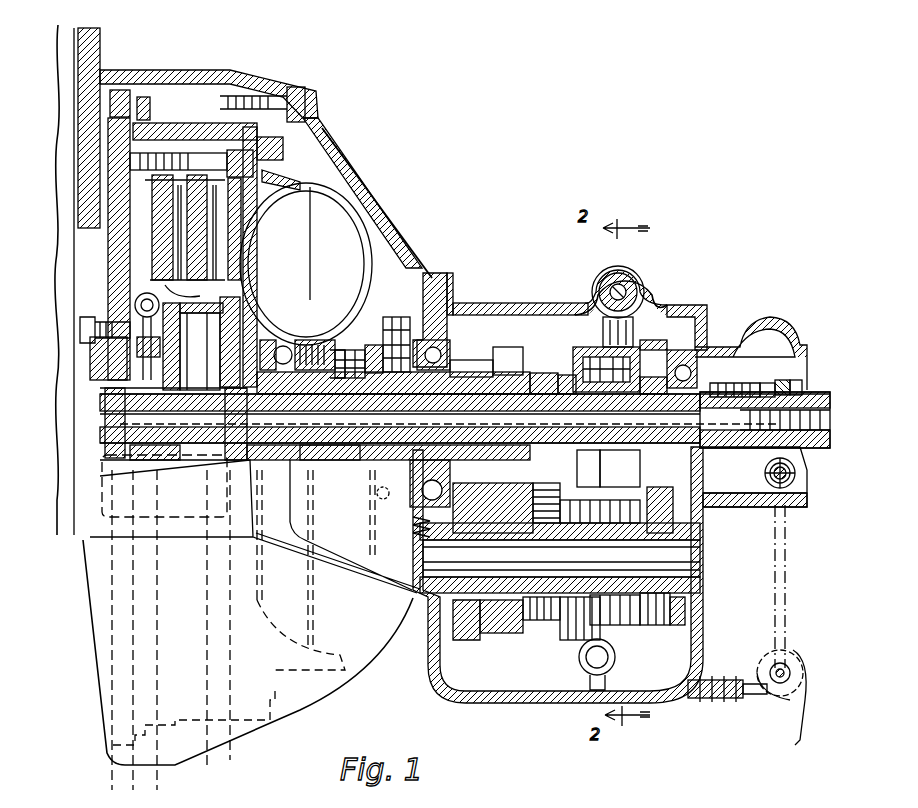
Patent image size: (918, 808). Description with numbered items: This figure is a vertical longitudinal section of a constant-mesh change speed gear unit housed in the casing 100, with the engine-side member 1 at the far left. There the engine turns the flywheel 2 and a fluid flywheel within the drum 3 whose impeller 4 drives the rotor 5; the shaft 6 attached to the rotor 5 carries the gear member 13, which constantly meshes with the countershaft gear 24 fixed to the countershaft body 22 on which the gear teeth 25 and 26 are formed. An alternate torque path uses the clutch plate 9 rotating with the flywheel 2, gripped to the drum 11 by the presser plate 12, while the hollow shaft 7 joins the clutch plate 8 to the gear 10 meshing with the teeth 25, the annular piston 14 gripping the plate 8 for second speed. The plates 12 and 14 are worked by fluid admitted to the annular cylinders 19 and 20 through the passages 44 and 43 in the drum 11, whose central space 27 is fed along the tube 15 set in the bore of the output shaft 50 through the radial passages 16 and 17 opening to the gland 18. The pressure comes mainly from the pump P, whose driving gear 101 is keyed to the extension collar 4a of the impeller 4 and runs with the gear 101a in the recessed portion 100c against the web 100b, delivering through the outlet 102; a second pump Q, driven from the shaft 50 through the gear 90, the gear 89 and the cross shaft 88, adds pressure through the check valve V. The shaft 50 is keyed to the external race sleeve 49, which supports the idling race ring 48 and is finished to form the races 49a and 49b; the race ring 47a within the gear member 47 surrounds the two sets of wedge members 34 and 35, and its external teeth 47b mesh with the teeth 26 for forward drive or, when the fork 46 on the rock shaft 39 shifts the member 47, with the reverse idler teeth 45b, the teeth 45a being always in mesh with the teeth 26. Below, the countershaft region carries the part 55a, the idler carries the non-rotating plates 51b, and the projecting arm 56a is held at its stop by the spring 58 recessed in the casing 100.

The bolt 1 is at (93, 317).
The flywheel 2 is at (110, 152).
The drum 3 is at (166, 118).
The impeller 4 is at (353, 232).
The extension collar 4a is at (367, 360).
The driven rotor 5 is at (293, 203).
The shaft 6 is at (410, 467).
The hollow shaft 7 is at (340, 447).
The clutch plate 8 is at (210, 212).
The clutch plate 9 is at (150, 236).
The gear 10 is at (507, 350).
The drum 11 is at (173, 360).
The presser plate 12 is at (177, 187).
The gear member 13 is at (463, 360).
The annular piston 14 is at (207, 243).
The tube 15 is at (343, 440).
The radial passage 16 is at (730, 400).
The radial passage 17 is at (780, 390).
The gland 18 is at (743, 390).
The annular cylinder 19 is at (173, 183).
The annular cylinder 20 is at (197, 183).
The countershaft body 22 is at (450, 592).
The countershaft gear 24 is at (477, 637).
The gear teeth 25 is at (517, 633).
The gear teeth 26 is at (547, 597).
The central space 27 is at (200, 460).
The wedge members 34 is at (587, 473).
The wedge members 35 is at (627, 473).
The rock shaft 39 is at (607, 283).
The passage 43 is at (212, 313).
The passage 44 is at (183, 313).
The teeth 45a is at (557, 613).
The teeth 45b is at (650, 603).
The fork 46 is at (650, 310).
The gear member 47 is at (607, 350).
The overrunning clutch race ring 47a is at (637, 327).
The external teeth 47b is at (690, 313).
The race ring 48 is at (577, 370).
The external race sleeve 49 is at (565, 375).
The overrunning clutch race 49a is at (533, 373).
The overrunning clutch race 49b is at (647, 377).
The output shaft 50 is at (820, 397).
The plates 51b is at (660, 613).
The countershaft 55a is at (617, 573).
The projecting arm 56a is at (600, 627).
The spring 58 is at (615, 665).
The cross shaft 88 is at (767, 474).
The gear 89 is at (790, 480).
The gear 90 is at (797, 397).
The casing 100 is at (482, 303).
The web 100b is at (393, 337).
The casing portion 100c is at (407, 312).
The pump driving gear 101 is at (440, 348).
The pump gear 101a is at (393, 323).
The pump delivery outlet 102 is at (380, 498).
The drive bolt D is at (138, 300).
The pump P is at (430, 293).
The pump Q is at (790, 738).
The check valve V is at (740, 683).